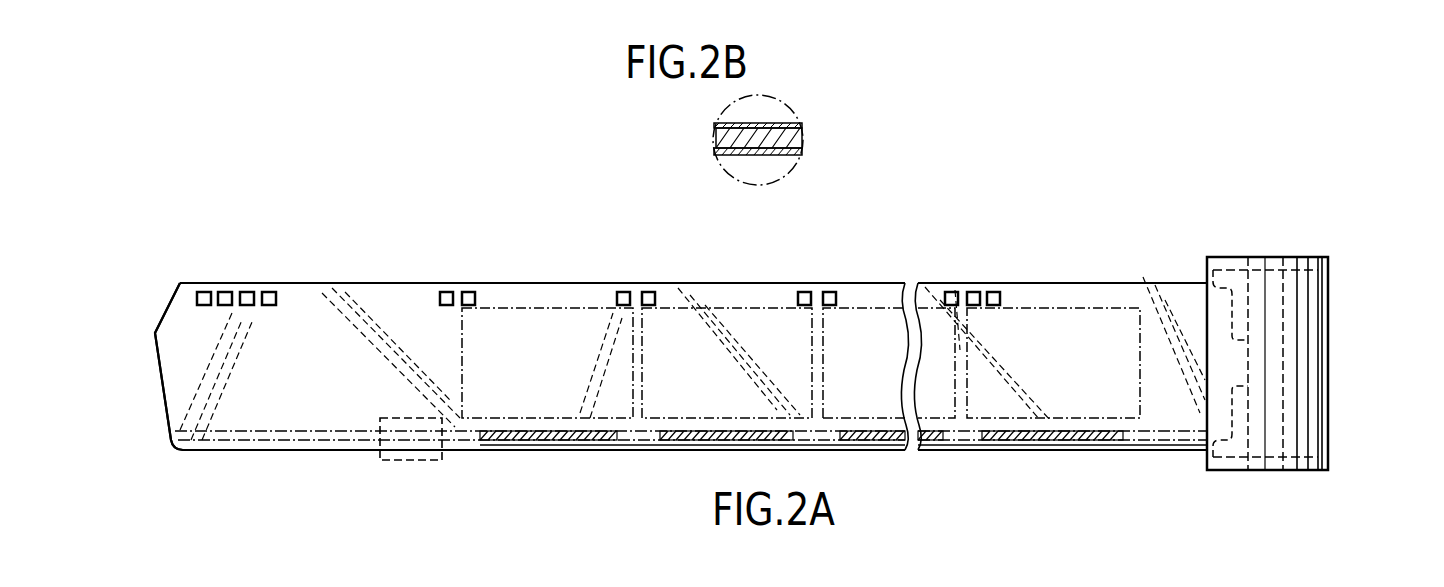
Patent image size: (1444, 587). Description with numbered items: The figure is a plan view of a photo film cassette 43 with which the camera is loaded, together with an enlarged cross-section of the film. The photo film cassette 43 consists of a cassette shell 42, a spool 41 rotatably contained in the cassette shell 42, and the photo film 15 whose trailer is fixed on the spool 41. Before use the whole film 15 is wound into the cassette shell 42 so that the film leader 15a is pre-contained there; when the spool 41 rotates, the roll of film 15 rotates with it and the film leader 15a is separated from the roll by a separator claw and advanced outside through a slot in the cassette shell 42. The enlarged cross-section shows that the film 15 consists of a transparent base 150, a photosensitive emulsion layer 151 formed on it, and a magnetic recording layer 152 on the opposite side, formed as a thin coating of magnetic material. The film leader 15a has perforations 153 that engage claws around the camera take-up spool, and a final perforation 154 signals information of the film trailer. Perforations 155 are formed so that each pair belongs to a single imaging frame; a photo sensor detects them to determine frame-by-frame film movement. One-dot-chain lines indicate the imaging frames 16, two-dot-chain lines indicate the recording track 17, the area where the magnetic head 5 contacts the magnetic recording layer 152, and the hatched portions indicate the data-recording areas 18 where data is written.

In FIG. 2A, the magnetic head 5 is at (412, 460).
In FIG. 2A, the photo film 15 is at (355, 252).
In FIG. 2A, the film leader 15a is at (178, 393).
In FIG. 2A, the imaging frames 16 is at (570, 308).
In FIG. 2A, the recording track 17 is at (333, 440).
In FIG. 2A, the data-recording areas 18 is at (551, 440).
In FIG. 2A, the spool 41 is at (1272, 353).
In FIG. 2A, the cassette shell 42 is at (1310, 395).
In FIG. 2A, the photo film cassette 43 is at (1232, 205).
In FIG. 2B, the base 150 is at (800, 137).
In FIG. 2B, the photosensitive emulsion layer 151 is at (783, 127).
In FIG. 2B, the magnetic recording layer 152 is at (790, 157).
In FIG. 2A, the perforations 153 is at (252, 290).
In FIG. 2A, the final perforation 154 is at (975, 290).
In FIG. 2A, the perforations 155 is at (468, 290).